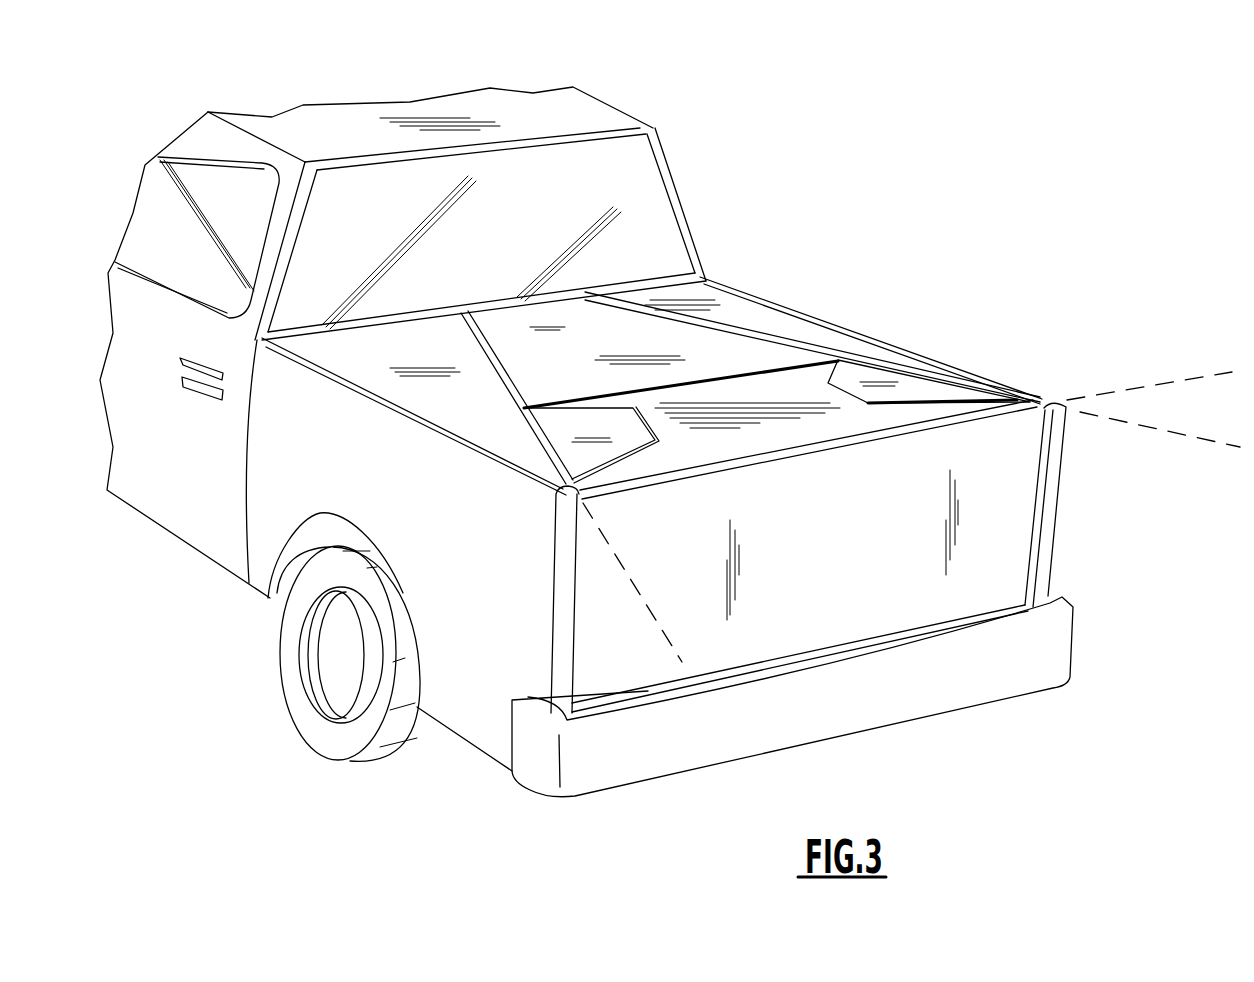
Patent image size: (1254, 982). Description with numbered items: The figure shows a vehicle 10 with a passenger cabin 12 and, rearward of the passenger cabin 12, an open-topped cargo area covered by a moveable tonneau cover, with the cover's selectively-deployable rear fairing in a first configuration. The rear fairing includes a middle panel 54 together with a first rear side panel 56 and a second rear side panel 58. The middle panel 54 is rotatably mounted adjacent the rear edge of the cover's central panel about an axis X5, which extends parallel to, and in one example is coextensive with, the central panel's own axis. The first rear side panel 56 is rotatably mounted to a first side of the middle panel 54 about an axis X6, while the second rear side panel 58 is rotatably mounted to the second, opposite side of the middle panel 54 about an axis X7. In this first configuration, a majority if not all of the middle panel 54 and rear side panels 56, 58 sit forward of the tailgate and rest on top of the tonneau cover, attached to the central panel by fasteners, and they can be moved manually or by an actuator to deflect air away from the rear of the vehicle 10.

The vehicle 10 is at (892, 130).
The passenger cabin 12 is at (612, 90).
The middle panel 54 is at (798, 388).
The first rear side panel 56 is at (580, 424).
The second rear side panel 58 is at (903, 392).
The axis X5 is at (1160, 381).
The axis X6 is at (648, 610).
The axis X7 is at (1198, 440).